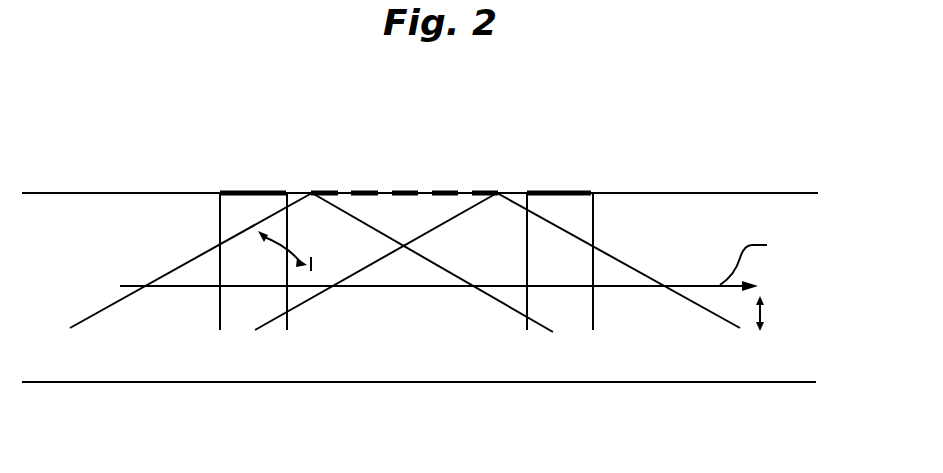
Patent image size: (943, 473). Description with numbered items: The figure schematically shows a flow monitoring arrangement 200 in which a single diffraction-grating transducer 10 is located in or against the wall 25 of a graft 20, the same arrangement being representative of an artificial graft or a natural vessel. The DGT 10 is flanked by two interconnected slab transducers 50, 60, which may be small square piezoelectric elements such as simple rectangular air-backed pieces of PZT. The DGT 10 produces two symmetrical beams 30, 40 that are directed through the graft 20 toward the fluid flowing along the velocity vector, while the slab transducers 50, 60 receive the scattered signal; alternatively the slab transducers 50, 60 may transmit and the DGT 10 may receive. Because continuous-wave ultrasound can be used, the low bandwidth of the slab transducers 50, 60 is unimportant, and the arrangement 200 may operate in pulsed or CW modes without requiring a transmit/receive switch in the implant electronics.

The arrangement 200 is at (206, 134).
The wall 25 is at (637, 193).
The graft 20 is at (778, 363).
The slab transducer 50 is at (266, 193).
The slab transducer 60 is at (546, 193).
The diffraction-grating transducer 10 is at (413, 193).
The beam 30 is at (177, 329).
The beam 40 is at (647, 330).